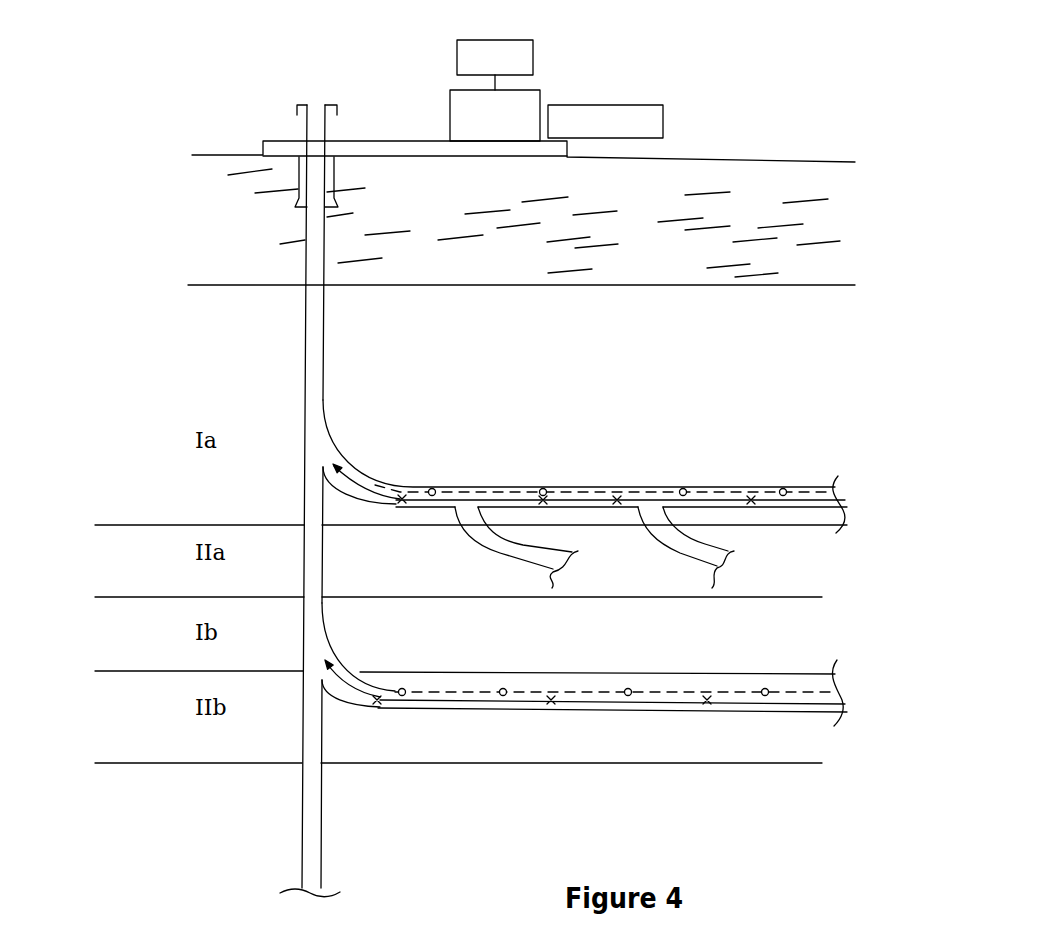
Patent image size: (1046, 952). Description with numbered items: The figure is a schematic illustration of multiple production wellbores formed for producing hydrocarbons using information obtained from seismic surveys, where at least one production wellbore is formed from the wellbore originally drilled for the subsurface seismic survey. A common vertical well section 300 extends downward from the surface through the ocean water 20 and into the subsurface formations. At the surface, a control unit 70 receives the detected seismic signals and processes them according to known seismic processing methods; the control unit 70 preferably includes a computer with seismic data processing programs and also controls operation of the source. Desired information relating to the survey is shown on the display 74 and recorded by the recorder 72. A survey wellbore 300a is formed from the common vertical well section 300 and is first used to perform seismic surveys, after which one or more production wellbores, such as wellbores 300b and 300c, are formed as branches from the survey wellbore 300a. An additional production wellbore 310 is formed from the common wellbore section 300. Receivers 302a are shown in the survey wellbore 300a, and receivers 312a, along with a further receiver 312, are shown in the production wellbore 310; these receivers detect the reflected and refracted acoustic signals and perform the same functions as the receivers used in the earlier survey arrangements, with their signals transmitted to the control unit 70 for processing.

The ocean water 20 is at (660, 256).
The surface control unit 70 is at (457, 90).
The recorder 72 is at (645, 105).
The display 74 is at (523, 40).
The common vertical well section 300 is at (305, 347).
The survey wellbore 300a is at (470, 486).
The production wellbore 300b is at (485, 550).
The production wellbore 300c is at (673, 558).
The receivers 302a is at (617, 490).
The production wellbore 310 is at (607, 688).
The sensor in second lateral 312 is at (542, 710).
The receivers 312a is at (692, 710).